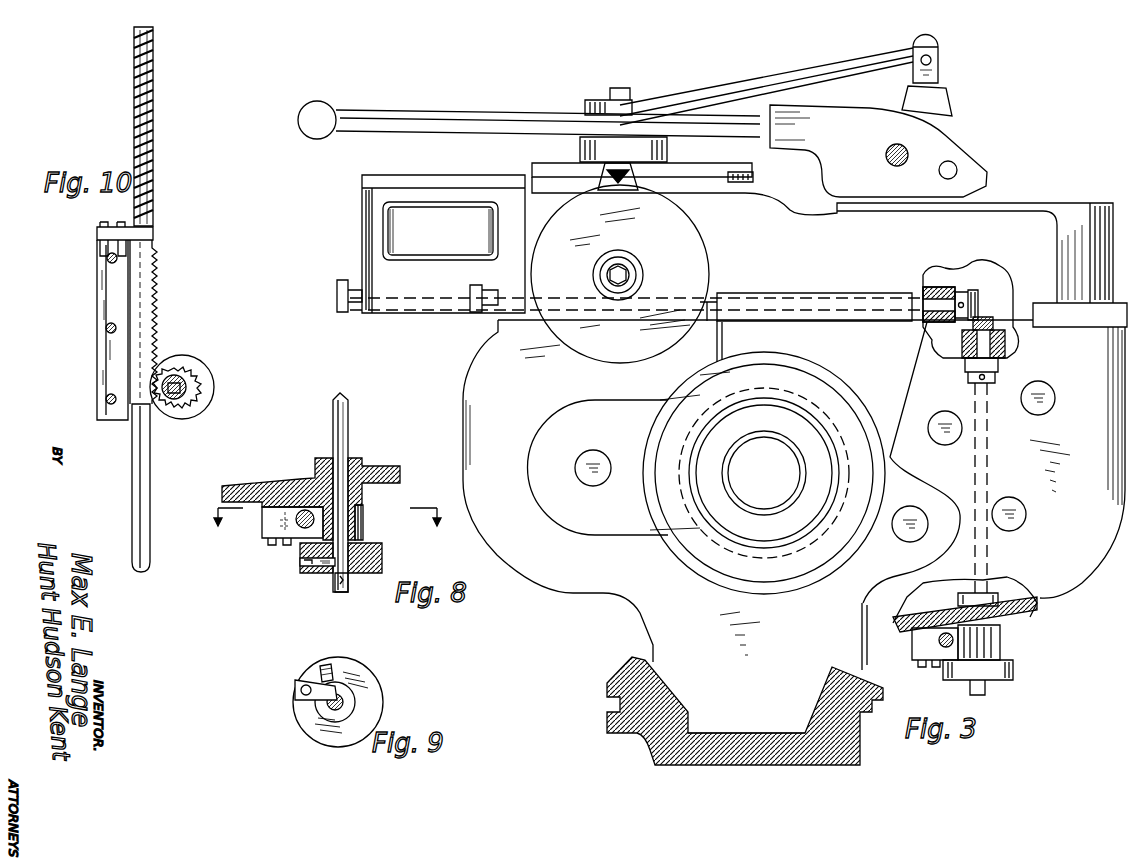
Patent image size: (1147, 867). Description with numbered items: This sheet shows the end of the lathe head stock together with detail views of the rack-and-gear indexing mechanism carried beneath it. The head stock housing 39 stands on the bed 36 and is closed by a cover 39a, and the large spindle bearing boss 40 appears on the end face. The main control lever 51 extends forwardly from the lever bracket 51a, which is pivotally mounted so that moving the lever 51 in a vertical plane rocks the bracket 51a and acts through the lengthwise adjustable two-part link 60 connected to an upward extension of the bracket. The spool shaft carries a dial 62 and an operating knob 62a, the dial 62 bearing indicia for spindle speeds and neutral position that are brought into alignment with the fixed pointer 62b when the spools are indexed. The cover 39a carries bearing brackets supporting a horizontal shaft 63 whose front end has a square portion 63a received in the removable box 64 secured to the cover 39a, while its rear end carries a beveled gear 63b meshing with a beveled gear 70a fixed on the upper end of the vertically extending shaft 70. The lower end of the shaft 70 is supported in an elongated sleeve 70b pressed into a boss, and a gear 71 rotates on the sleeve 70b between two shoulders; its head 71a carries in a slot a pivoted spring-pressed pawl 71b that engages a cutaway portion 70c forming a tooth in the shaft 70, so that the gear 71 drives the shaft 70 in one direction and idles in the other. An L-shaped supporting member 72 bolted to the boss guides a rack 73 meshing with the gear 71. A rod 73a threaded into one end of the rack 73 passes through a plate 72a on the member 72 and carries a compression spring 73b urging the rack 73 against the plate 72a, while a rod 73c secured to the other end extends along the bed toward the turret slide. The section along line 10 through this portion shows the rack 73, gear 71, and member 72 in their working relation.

In FIG. 8, the section line 10— 10 is at (326, 522).
In FIG. 3, the base 36 is at (672, 692).
In FIG. 3, the housing 39 is at (1080, 583).
In FIG. 3, the cover 39a is at (1050, 230).
In FIG. 3, the spindle bearing boss 40 is at (728, 496).
In FIG. 3, the main control lever 51 is at (488, 118).
In FIG. 3, the lever bracket 51a is at (962, 148).
In FIG. 3, the two-part link 60 is at (760, 82).
In FIG. 3, the dial 62 is at (690, 232).
In FIG. 3, the operating knob 62a is at (640, 270).
In FIG. 3, the fixed pointer 62b is at (667, 160).
In FIG. 3, the shaft 63 is at (752, 292).
In FIG. 3, the square portion 63a is at (482, 286).
In FIG. 3, the beveled gear 63b is at (975, 300).
In FIG. 3, the removable box 64 is at (437, 183).
In FIG. 10, the vertically extending shaft 70 is at (182, 399).
In FIG. 8, the vertically extending shaft 70 is at (345, 428).
In FIG. 3, the vertically extending shaft 70 is at (980, 470).
In FIG. 3, the beveled gear 70a is at (1005, 305).
In FIG. 10, the elongated sleeve 70b is at (182, 387).
In FIG. 8, the elongated sleeve 70b is at (362, 458).
In FIG. 8, the cutaway portion 70c is at (341, 592).
In FIG. 10, the gear 71 is at (190, 372).
In FIG. 8, the gear 71 is at (363, 526).
In FIG. 3, the gear 71 is at (1000, 650).
In FIG. 8, the head 71a is at (382, 558).
In FIG. 9, the head 71a is at (370, 688).
In FIG. 3, the head 71a is at (1013, 675).
In FIG. 8, the pawl 71b is at (324, 572).
In FIG. 9, the pawl 71b is at (300, 700).
In FIG. 10, the L-shaped supporting member 72 is at (98, 296).
In FIG. 8, the L-shaped supporting member 72 is at (265, 523).
In FIG. 3, the L-shaped supporting member 72 is at (914, 640).
In FIG. 10, the plate 72a is at (97, 233).
In FIG. 10, the rack 73 is at (150, 292).
In FIG. 10, the rod 73a is at (150, 162).
In FIG. 10, the compression spring 73b is at (153, 130).
In FIG. 10, the rod 73c is at (141, 478).
In FIG. 8, the rod 73c is at (302, 526).
In FIG. 3, the rod 73c is at (940, 645).